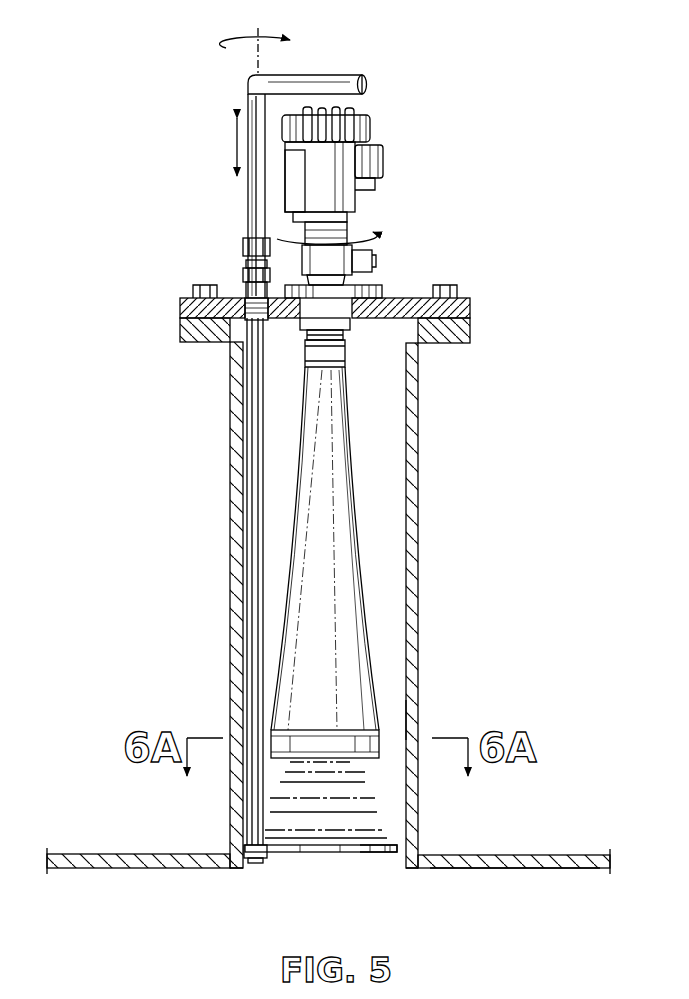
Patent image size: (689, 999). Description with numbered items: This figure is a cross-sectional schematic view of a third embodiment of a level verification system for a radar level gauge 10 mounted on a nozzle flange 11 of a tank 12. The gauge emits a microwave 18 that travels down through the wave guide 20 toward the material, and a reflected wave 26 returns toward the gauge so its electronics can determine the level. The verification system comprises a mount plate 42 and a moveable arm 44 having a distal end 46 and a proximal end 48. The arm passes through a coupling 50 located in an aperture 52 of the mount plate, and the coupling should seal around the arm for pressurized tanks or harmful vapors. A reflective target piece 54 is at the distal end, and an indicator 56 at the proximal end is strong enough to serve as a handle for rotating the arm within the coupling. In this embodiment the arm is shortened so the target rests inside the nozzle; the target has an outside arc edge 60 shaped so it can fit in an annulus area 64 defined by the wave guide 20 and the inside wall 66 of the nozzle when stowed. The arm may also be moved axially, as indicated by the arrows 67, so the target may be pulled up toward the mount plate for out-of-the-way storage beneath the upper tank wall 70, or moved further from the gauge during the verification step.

The radar level gauge 10 is at (394, 126).
The nozzle flange 11 is at (230, 470).
The tank 12 is at (571, 850).
The microwave 18 is at (292, 827).
The wave guide 20 is at (368, 596).
The reflected wave 26 is at (317, 772).
The mount plate 42 is at (470, 306).
The moveable arm 44 is at (258, 568).
The distal end 46 is at (252, 864).
The proximal end 48 is at (247, 106).
The coupling 50 is at (245, 248).
The aperture 52 is at (244, 320).
The reflective target piece 54 is at (354, 855).
The indicator 56 is at (318, 75).
The outside arc edge 60 is at (330, 853).
The annulus area 64 is at (408, 718).
The inside wall 66 is at (410, 500).
The arrows 67 is at (235, 158).
The upper tank wall 70 is at (497, 870).